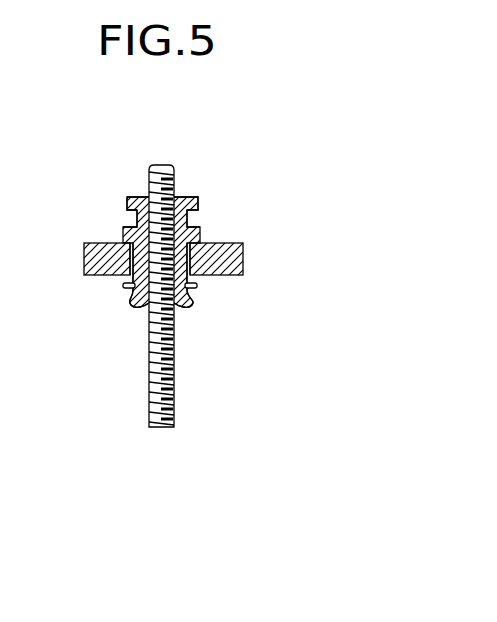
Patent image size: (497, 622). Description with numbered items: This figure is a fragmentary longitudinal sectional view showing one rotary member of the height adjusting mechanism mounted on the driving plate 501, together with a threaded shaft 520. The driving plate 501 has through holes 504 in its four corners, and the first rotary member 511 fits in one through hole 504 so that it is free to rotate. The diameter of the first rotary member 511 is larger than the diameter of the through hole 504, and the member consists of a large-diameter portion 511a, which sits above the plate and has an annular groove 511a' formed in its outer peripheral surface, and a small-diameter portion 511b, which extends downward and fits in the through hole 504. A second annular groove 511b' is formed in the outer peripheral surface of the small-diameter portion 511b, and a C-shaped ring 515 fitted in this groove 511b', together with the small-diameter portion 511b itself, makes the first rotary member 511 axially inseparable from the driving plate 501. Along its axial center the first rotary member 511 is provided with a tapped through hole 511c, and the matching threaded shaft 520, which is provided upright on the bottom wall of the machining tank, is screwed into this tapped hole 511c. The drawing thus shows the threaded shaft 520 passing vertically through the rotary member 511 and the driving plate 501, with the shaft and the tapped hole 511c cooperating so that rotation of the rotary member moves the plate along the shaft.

The driving plate 501 is at (97, 276).
The through hole 504 is at (124, 233).
The first rotary member 511 is at (137, 190).
The large-diameter portion 511a is at (191, 179).
The annular groove 511a' is at (220, 208).
The small-diameter portion 511b is at (211, 285).
The annular groove 511b' is at (110, 348).
The tapped through hole 511c is at (176, 309).
The C-shaped ring 515 is at (125, 288).
The threaded shaft 520 is at (177, 403).